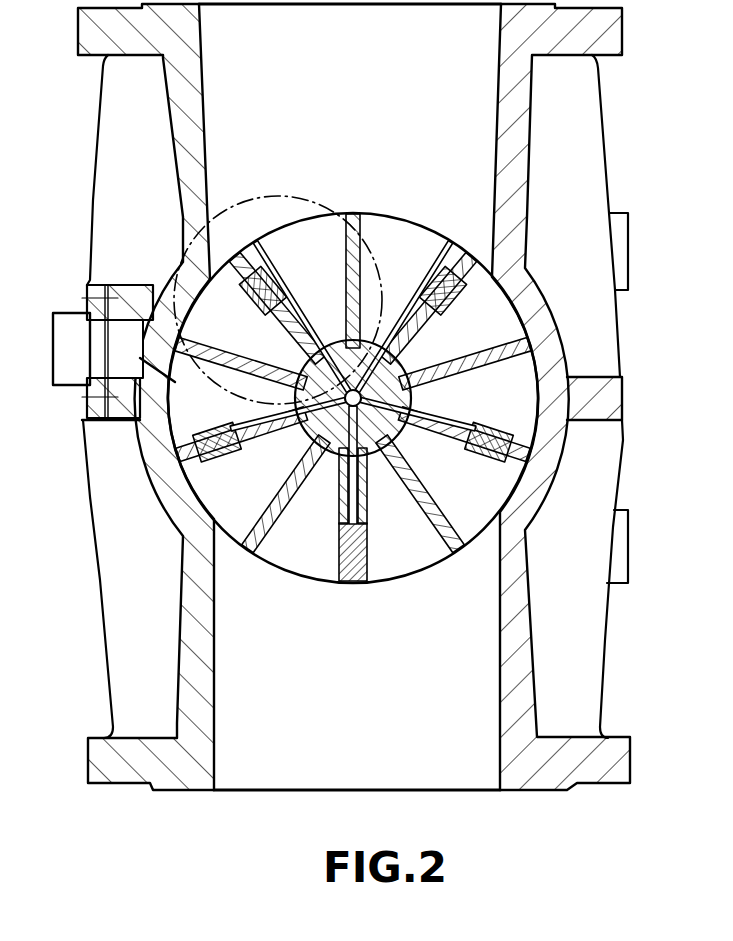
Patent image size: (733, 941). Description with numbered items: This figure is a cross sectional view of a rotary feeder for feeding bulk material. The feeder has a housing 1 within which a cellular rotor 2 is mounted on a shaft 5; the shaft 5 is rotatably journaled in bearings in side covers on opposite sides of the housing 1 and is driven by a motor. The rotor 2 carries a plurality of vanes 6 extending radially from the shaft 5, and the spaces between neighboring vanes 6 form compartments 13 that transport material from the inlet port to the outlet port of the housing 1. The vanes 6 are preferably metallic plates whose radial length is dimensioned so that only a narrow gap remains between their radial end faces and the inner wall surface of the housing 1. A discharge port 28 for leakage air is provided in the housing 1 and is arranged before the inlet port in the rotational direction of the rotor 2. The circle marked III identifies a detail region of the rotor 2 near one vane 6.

The valve housing 1 is at (517, 117).
The ball (closure member) 2 is at (310, 594).
The hub 5 is at (370, 340).
The bearing block of spoke 6 is at (317, 543).
The spoke 13 is at (317, 271).
The stem port / neck 28 is at (155, 376).
The section III detail circle III is at (291, 195).